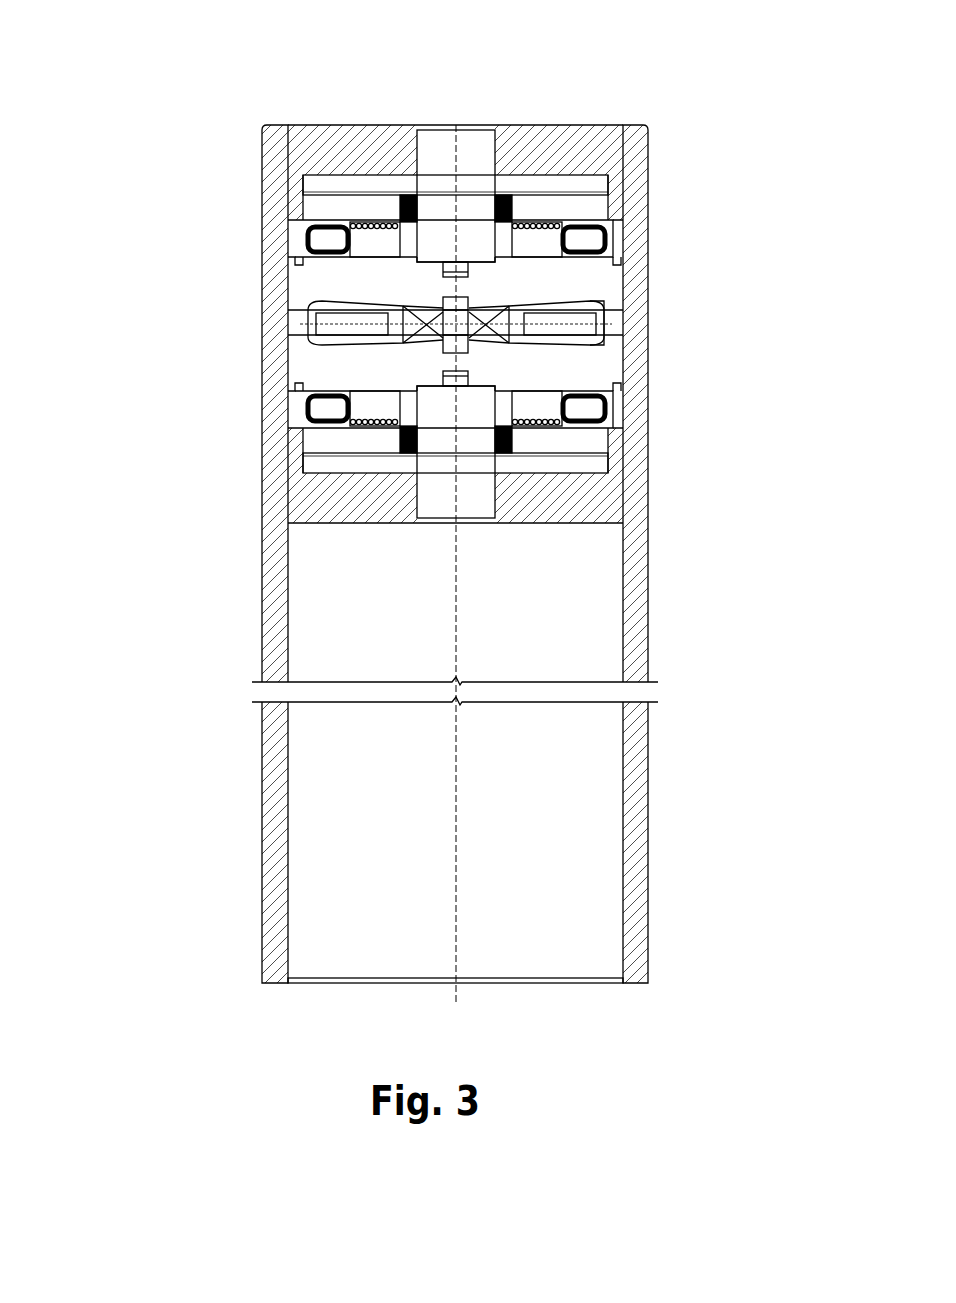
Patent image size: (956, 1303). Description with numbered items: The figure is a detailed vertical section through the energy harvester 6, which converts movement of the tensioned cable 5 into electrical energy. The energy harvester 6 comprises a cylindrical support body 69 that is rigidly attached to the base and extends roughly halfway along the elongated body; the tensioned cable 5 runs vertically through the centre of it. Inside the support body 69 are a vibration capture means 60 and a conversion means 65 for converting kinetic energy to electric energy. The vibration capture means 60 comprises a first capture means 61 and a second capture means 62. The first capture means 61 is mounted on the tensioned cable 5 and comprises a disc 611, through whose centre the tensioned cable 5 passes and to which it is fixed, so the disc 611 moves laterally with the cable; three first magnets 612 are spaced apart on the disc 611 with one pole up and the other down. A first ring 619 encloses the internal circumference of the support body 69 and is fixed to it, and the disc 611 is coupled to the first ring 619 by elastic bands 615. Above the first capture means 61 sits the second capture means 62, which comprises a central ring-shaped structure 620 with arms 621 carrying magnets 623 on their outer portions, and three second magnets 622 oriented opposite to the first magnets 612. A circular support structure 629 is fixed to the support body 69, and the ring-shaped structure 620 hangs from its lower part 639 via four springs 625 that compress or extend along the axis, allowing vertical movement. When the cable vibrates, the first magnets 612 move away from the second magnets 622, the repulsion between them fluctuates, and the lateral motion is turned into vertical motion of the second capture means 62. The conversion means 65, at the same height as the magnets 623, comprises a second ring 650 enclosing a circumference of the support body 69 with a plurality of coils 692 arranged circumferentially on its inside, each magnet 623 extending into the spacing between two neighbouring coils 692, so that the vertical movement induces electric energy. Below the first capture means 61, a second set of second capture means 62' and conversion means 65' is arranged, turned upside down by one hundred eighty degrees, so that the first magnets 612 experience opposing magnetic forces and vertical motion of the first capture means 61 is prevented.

The energy harvester 6 is at (698, 152).
The cylindrical support body 69 is at (633, 555).
The tensioned cable 5 is at (456, 883).
The vibration capture means 60 is at (197, 285).
The conversion means 65 is at (393, 139).
The circular support structure 629 is at (348, 152).
The springs 625 is at (510, 243).
The lower part of the support structure 639 is at (585, 183).
The central ring-shaped structure 620 is at (518, 222).
The second capture means 62 is at (434, 155).
The second ring 650 is at (293, 227).
The coils 692 is at (320, 227).
The magnets 623 is at (585, 240).
The arms 621 is at (373, 243).
The second magnets 622 is at (470, 270).
The first capture means 61 is at (237, 323).
The first ring 619 is at (300, 325).
The disc 611 is at (600, 328).
The elastic bands 615 is at (588, 343).
The first magnets 612 is at (468, 343).
The conversion means 65' is at (350, 454).
The second capture means 62' is at (351, 453).